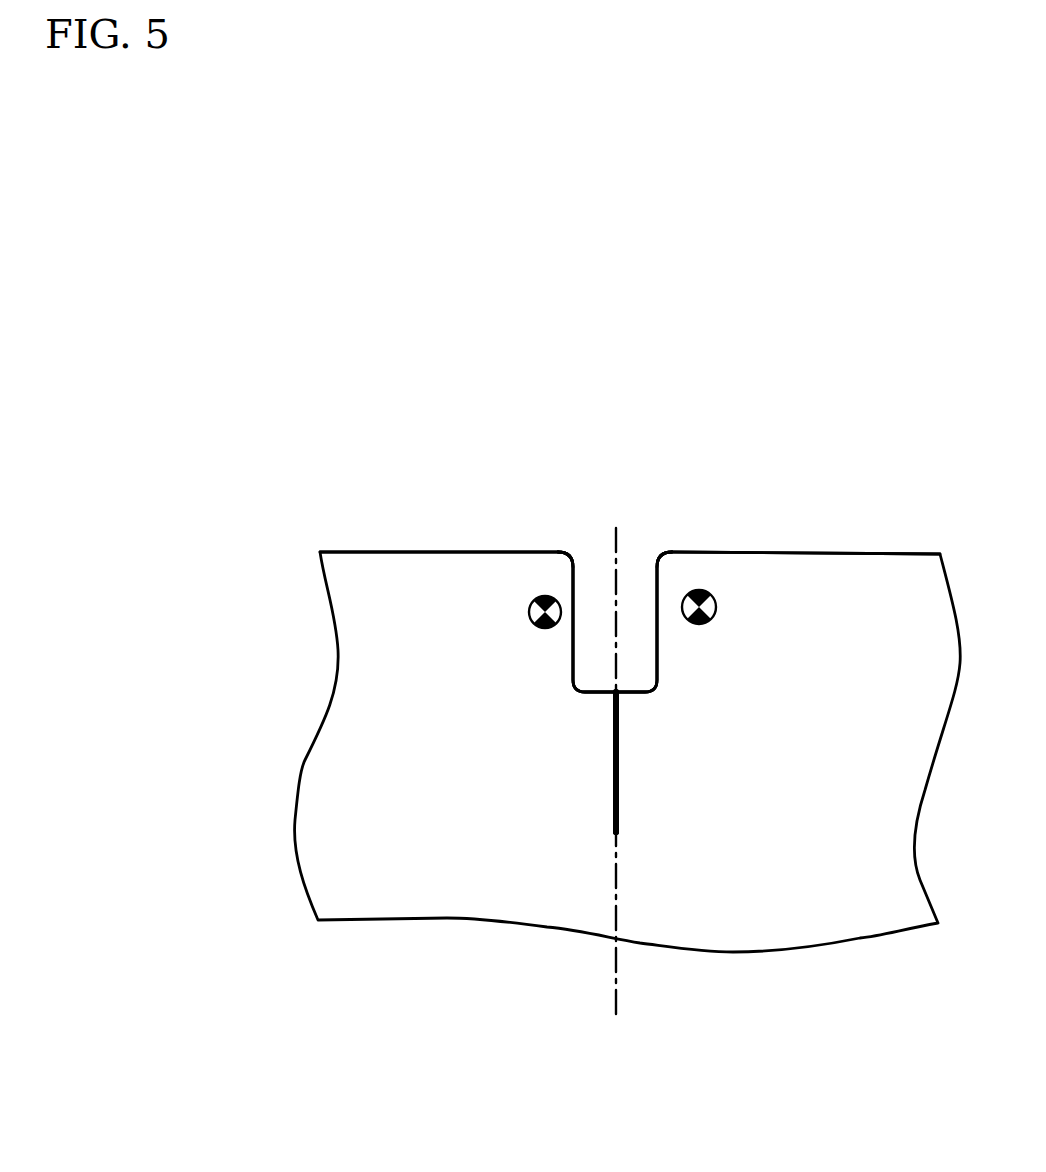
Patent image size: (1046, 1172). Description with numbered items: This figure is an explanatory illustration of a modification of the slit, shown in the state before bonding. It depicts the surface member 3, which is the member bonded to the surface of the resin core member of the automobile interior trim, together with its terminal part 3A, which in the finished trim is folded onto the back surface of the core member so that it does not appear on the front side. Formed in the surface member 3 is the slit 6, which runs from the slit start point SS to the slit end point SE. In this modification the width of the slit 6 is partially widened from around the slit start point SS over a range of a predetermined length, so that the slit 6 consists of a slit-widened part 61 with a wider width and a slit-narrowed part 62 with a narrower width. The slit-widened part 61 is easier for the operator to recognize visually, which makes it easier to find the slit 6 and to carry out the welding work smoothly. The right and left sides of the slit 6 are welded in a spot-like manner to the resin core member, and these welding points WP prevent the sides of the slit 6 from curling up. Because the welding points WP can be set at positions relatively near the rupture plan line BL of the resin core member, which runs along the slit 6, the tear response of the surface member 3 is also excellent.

The surface member 3 is at (210, 745).
The terminal part 3A is at (910, 552).
The slit 6 is at (813, 665).
The slit-widened part 61 is at (665, 660).
The slit-narrowed part 62 is at (635, 775).
The slit end point SE is at (628, 835).
The slit start point SS is at (637, 552).
The rupture plan line BL is at (613, 545).
The welding points WP is at (529, 612).